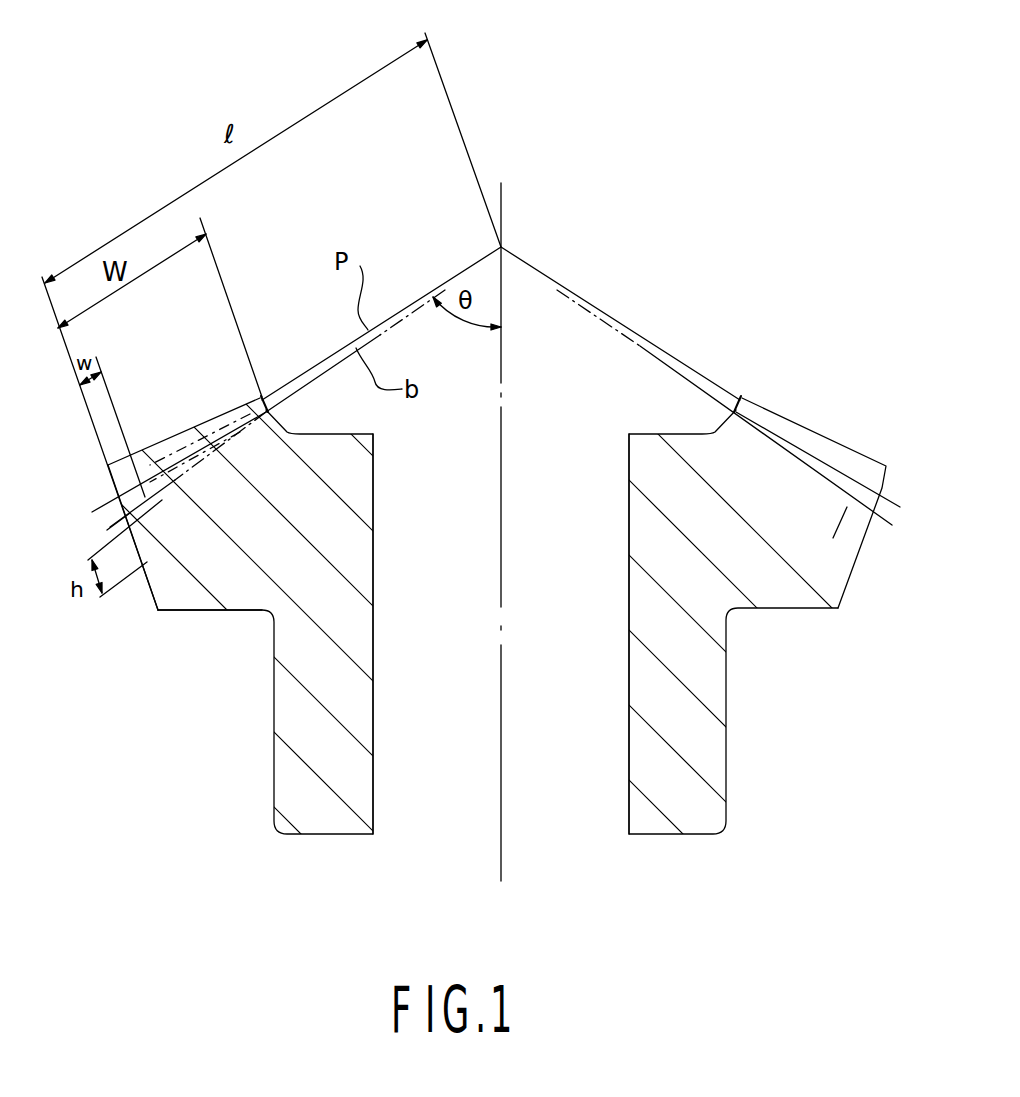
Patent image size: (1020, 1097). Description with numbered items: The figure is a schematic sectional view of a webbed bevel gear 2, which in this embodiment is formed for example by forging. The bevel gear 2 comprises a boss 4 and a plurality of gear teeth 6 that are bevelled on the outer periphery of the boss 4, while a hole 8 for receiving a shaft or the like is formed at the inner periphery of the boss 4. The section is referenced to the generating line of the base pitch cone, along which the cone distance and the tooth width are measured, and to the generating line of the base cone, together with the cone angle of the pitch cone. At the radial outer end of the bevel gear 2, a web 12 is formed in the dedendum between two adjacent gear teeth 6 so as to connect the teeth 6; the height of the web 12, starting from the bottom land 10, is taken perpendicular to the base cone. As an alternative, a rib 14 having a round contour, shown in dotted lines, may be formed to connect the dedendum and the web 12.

The bevel gear 2 is at (766, 388).
The boss 4 is at (277, 745).
The gear teeth 6 is at (168, 447).
The hole 8 is at (372, 771).
The bottom land 10 is at (227, 477).
The web 12 is at (143, 538).
The rib 14 is at (162, 528).